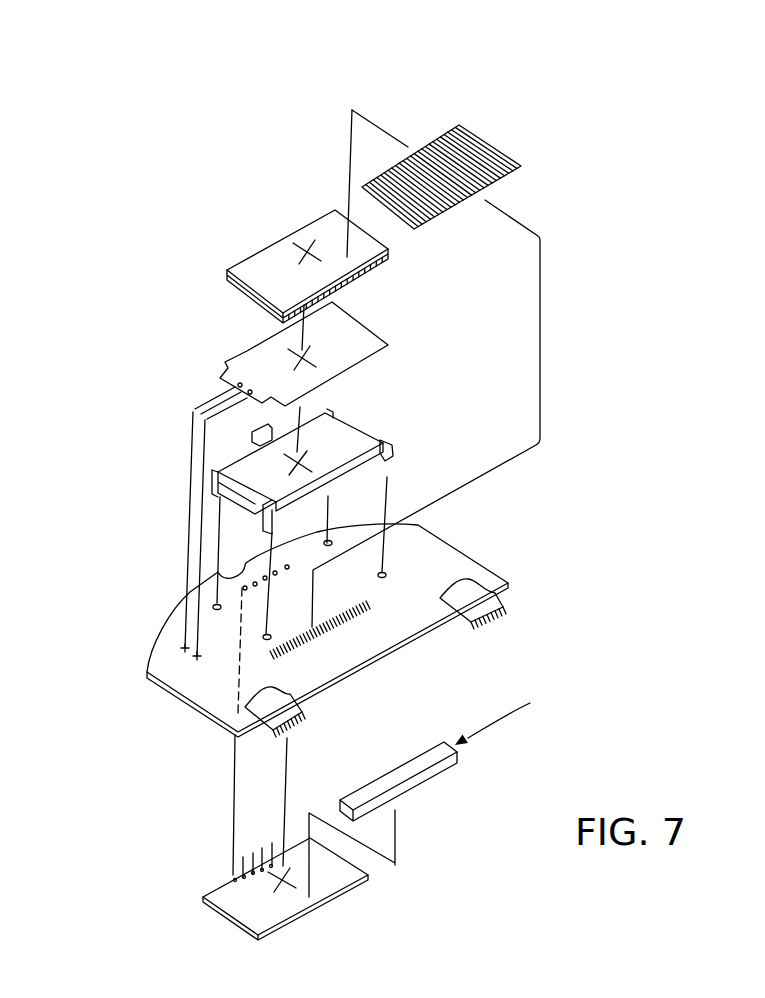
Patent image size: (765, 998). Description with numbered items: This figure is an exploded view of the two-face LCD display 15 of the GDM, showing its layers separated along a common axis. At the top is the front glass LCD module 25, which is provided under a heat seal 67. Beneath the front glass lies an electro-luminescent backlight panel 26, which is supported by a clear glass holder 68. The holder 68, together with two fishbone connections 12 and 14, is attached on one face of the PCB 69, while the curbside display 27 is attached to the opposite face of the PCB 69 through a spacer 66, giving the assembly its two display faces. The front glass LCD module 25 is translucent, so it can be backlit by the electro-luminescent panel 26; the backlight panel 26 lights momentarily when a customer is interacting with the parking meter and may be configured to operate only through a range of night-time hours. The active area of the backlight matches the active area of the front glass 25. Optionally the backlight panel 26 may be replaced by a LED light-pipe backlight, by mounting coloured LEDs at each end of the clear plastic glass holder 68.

The LCD display 15 is at (424, 99).
The front glass LCD module 25 is at (322, 224).
The heat seal 67 is at (470, 182).
The electro-luminescent backlight panel 26 is at (252, 360).
The clear glass holder 68 is at (347, 450).
The PCB 69 is at (193, 678).
The fishbone connection 14 is at (477, 602).
The fishbone connection 12 is at (268, 703).
The curbside display 27 is at (253, 902).
The spacer 66 is at (415, 778).